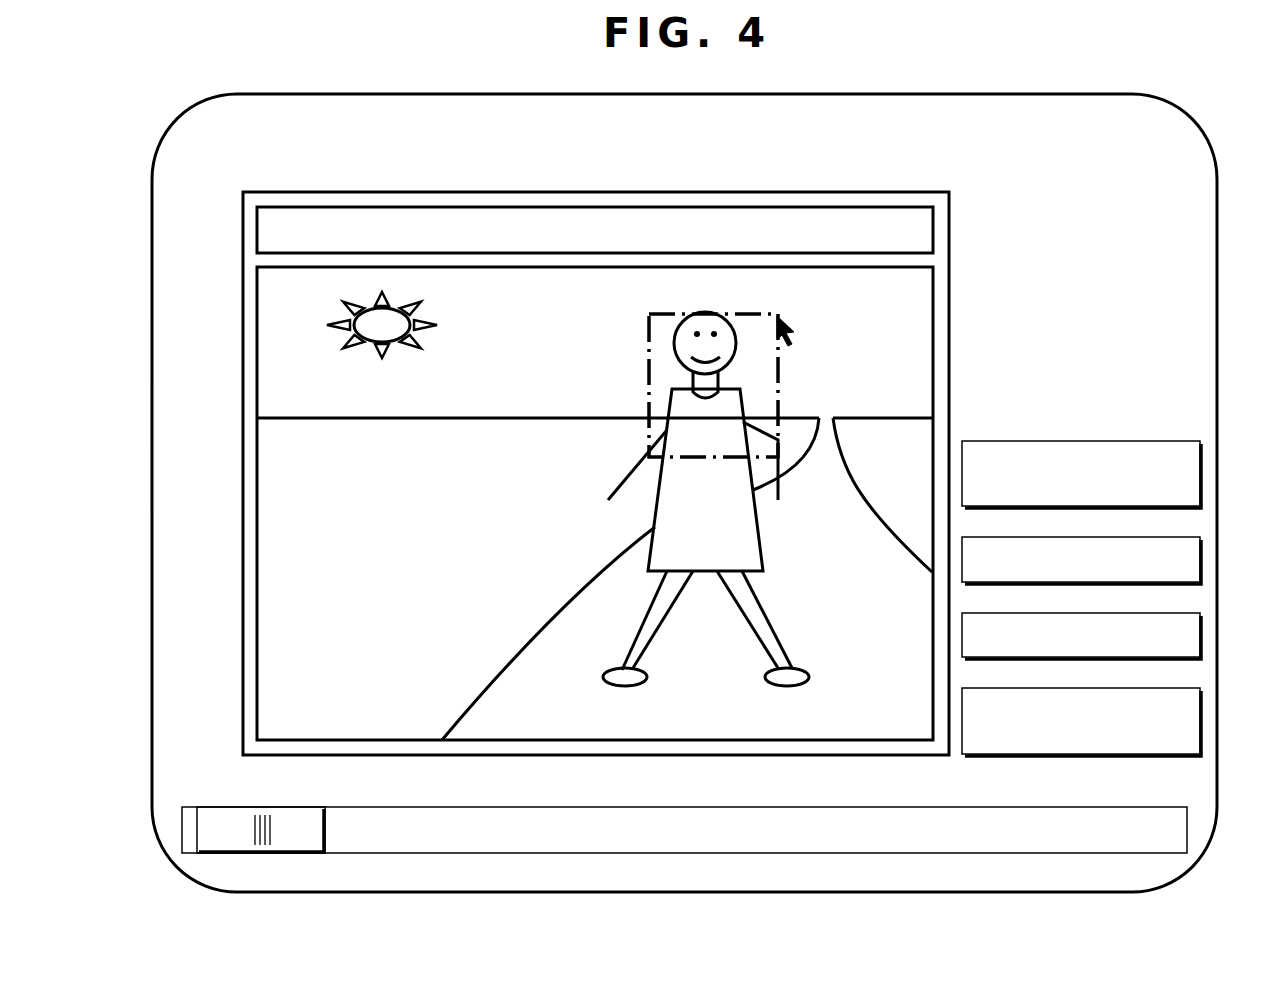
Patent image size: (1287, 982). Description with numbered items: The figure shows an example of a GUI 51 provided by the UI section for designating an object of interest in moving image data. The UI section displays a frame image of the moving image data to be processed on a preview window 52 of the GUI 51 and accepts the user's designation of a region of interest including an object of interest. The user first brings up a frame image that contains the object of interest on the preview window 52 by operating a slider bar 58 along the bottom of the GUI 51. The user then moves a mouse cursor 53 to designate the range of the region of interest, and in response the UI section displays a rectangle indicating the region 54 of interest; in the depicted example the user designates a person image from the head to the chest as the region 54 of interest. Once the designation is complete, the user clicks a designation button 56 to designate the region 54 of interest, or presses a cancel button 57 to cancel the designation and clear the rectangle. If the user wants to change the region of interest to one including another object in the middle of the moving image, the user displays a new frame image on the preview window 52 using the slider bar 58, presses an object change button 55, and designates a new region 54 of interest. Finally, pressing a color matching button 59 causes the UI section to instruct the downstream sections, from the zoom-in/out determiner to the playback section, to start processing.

The GUI 51 is at (1218, 203).
The preview window 52 is at (950, 225).
The mouse cursor 53 is at (793, 322).
The region of interest 54 is at (780, 380).
The object change button 55 is at (1203, 470).
The designation button 56 is at (1203, 558).
The cancel button 57 is at (1203, 632).
The slider bar 58 is at (1188, 827).
The color matching button 59 is at (1203, 718).